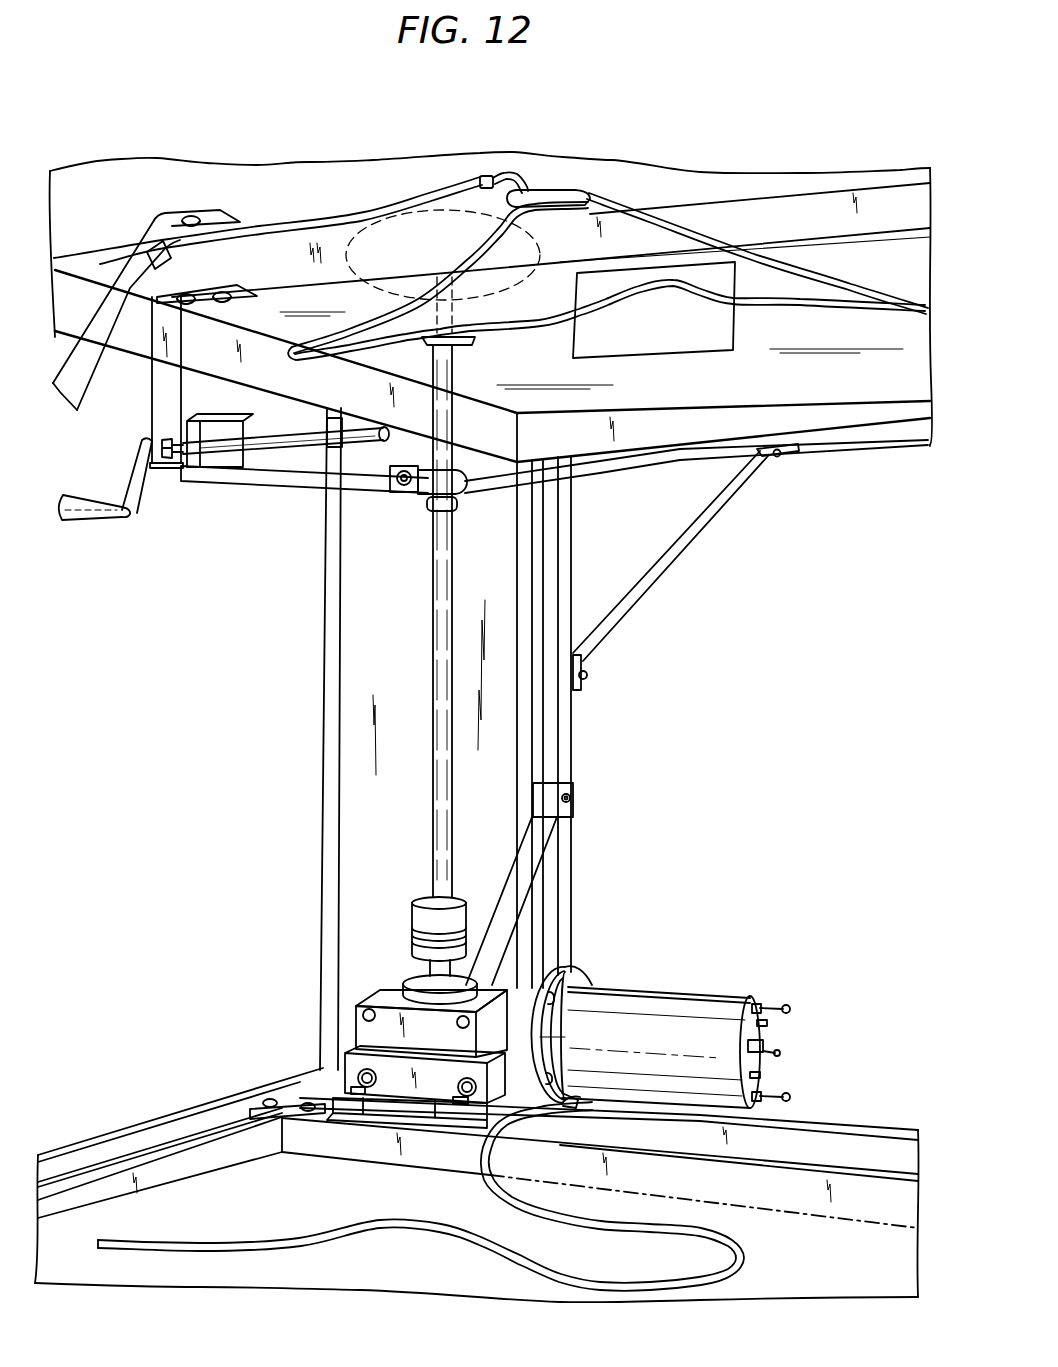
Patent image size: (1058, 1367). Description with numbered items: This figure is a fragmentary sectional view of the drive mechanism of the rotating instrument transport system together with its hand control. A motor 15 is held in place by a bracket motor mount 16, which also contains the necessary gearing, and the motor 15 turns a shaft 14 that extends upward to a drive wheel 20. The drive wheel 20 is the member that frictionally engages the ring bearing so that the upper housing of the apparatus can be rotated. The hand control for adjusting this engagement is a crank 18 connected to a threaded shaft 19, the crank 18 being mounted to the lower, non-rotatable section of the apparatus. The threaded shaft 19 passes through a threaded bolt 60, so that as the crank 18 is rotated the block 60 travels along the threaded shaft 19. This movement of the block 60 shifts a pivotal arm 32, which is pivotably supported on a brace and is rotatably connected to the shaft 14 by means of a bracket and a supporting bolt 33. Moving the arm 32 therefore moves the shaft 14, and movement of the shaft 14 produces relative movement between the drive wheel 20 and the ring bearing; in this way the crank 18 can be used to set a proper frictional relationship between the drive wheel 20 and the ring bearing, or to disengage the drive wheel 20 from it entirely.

The shaft 14 is at (472, 592).
The motor 15 is at (654, 1039).
The bracket motor mount 16 is at (387, 1046).
The crank 18 is at (82, 522).
The threaded shaft 19 is at (287, 444).
The drive wheel 20 is at (383, 210).
The pivotal arm 32 is at (373, 479).
The supporting bolt 33 is at (402, 497).
The threaded bolt 60 is at (233, 462).